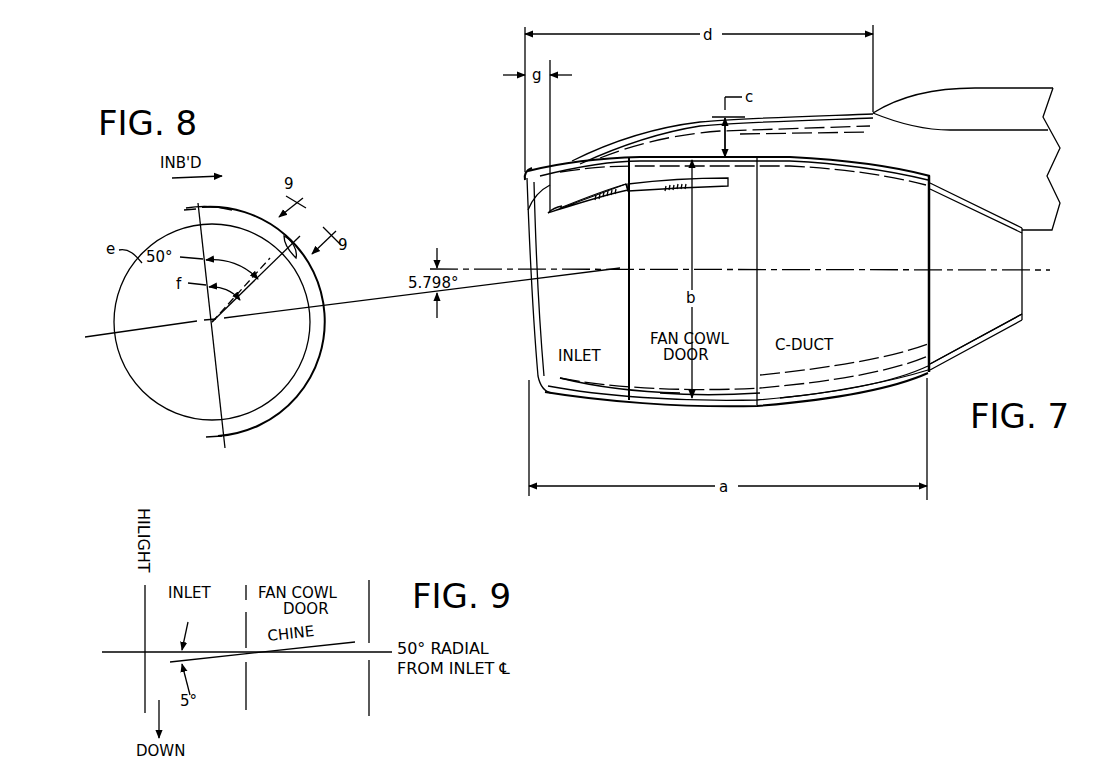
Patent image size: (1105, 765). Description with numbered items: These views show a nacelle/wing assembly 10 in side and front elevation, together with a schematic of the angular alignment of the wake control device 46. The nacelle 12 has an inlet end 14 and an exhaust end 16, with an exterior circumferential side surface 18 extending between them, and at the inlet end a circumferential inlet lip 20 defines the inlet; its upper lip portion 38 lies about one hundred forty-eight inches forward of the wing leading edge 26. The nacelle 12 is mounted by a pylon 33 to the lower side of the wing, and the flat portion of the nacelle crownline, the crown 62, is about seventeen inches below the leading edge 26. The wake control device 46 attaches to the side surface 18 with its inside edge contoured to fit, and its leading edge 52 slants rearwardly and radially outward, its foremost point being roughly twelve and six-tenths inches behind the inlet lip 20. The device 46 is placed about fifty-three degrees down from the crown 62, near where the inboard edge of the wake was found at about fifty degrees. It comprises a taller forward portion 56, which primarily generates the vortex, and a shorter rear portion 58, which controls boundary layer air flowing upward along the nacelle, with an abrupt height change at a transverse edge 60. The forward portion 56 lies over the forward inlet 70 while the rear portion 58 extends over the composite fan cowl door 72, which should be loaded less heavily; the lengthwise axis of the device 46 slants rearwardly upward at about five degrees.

In FIG. 8, the nacelle/wing assembly 10 is at (318, 378).
In FIG. 7, the nacelle/wing assembly 10 is at (838, 402).
In FIG. 7, the nacelle 12 is at (880, 390).
In FIG. 7, the inlet end 14 is at (537, 356).
In FIG. 7, the exhaust end 16 is at (930, 353).
In FIG. 8, the exterior circumferential side surface 18 is at (318, 345).
In FIG. 7, the exterior circumferential side surface 18 is at (558, 306).
In FIG. 7, the circumferential inlet lip 20 is at (527, 210).
In FIG. 7, the leading edge 26 is at (872, 111).
In FIG. 7, the pylon 33 is at (833, 143).
In FIG. 7, the upper lip portion 38 is at (527, 174).
In FIG. 8, the wake control device 46 is at (297, 250).
In FIG. 7, the wake control device 46 is at (594, 190).
In FIG. 7, the leading edge 52 is at (552, 210).
In FIG. 7, the forward portion 56 is at (594, 198).
In FIG. 7, the rear portion 58 is at (660, 194).
In FIG. 7, the transverse edge 60 is at (628, 186).
In FIG. 8, the crown 62 is at (196, 220).
In FIG. 7, the crown 62 is at (716, 156).
In FIG. 7, the forward inlet 70 is at (598, 380).
In FIG. 7, the fan cowl door 72 is at (666, 384).